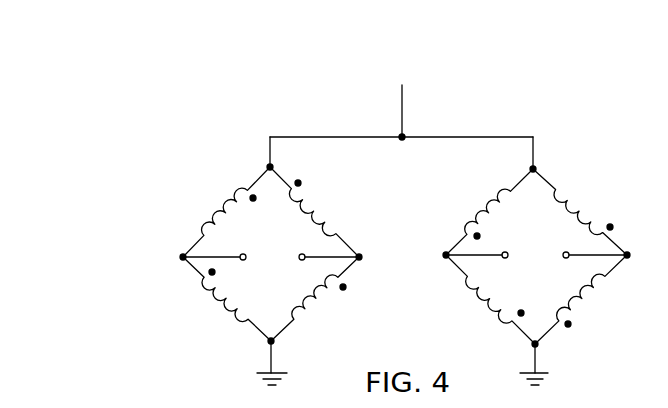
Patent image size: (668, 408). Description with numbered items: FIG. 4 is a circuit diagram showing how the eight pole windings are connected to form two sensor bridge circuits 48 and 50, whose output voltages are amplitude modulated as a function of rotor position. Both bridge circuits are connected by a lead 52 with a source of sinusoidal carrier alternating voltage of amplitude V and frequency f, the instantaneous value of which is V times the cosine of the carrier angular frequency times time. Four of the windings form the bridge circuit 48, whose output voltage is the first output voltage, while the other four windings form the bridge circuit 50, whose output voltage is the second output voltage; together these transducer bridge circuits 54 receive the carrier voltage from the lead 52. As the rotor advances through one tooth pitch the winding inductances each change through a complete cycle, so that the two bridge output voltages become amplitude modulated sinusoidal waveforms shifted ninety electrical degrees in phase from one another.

The sensor bridge circuit 48 is at (232, 184).
The sensor bridge circuit 50 is at (574, 188).
The lead 52 is at (403, 108).
The transducer bridge circuits 54 is at (504, 128).